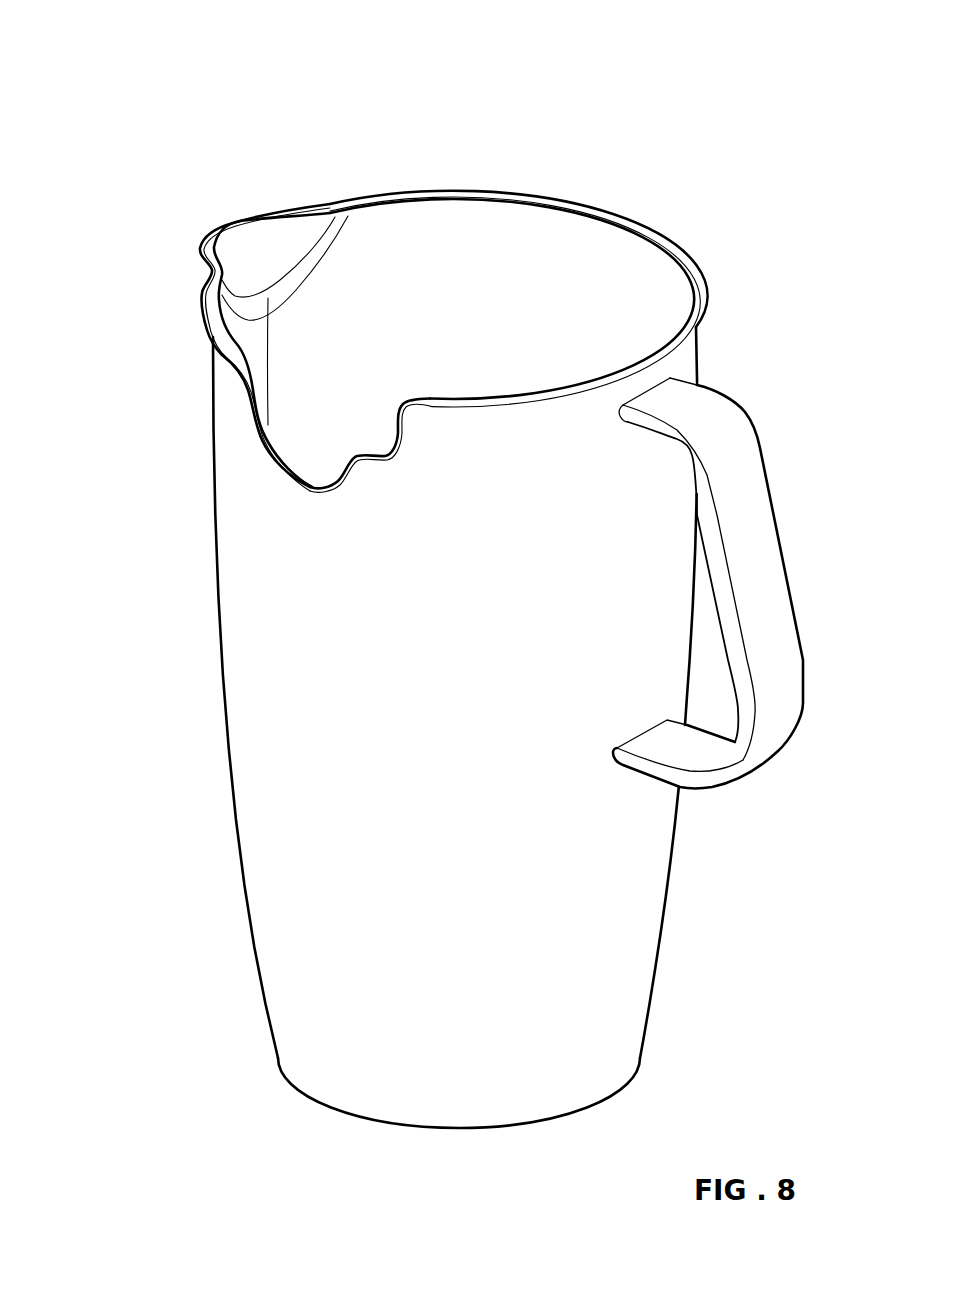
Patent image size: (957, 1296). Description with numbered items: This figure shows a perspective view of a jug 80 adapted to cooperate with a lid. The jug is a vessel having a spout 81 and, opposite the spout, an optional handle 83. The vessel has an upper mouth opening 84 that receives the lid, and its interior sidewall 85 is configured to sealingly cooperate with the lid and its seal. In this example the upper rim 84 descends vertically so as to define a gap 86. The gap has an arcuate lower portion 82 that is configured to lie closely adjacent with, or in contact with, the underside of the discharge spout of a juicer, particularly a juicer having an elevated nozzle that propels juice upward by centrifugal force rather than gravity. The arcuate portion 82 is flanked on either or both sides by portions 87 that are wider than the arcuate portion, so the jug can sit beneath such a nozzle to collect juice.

The pitcher container 80 is at (747, 170).
The spout 81 is at (268, 240).
The arcuate lower portion 82 is at (317, 493).
The handle 83 is at (738, 470).
The upper mouth opening 84 is at (512, 194).
The interior sidewall 85 is at (652, 307).
The gap 86 is at (322, 380).
The portions 87 is at (390, 447).